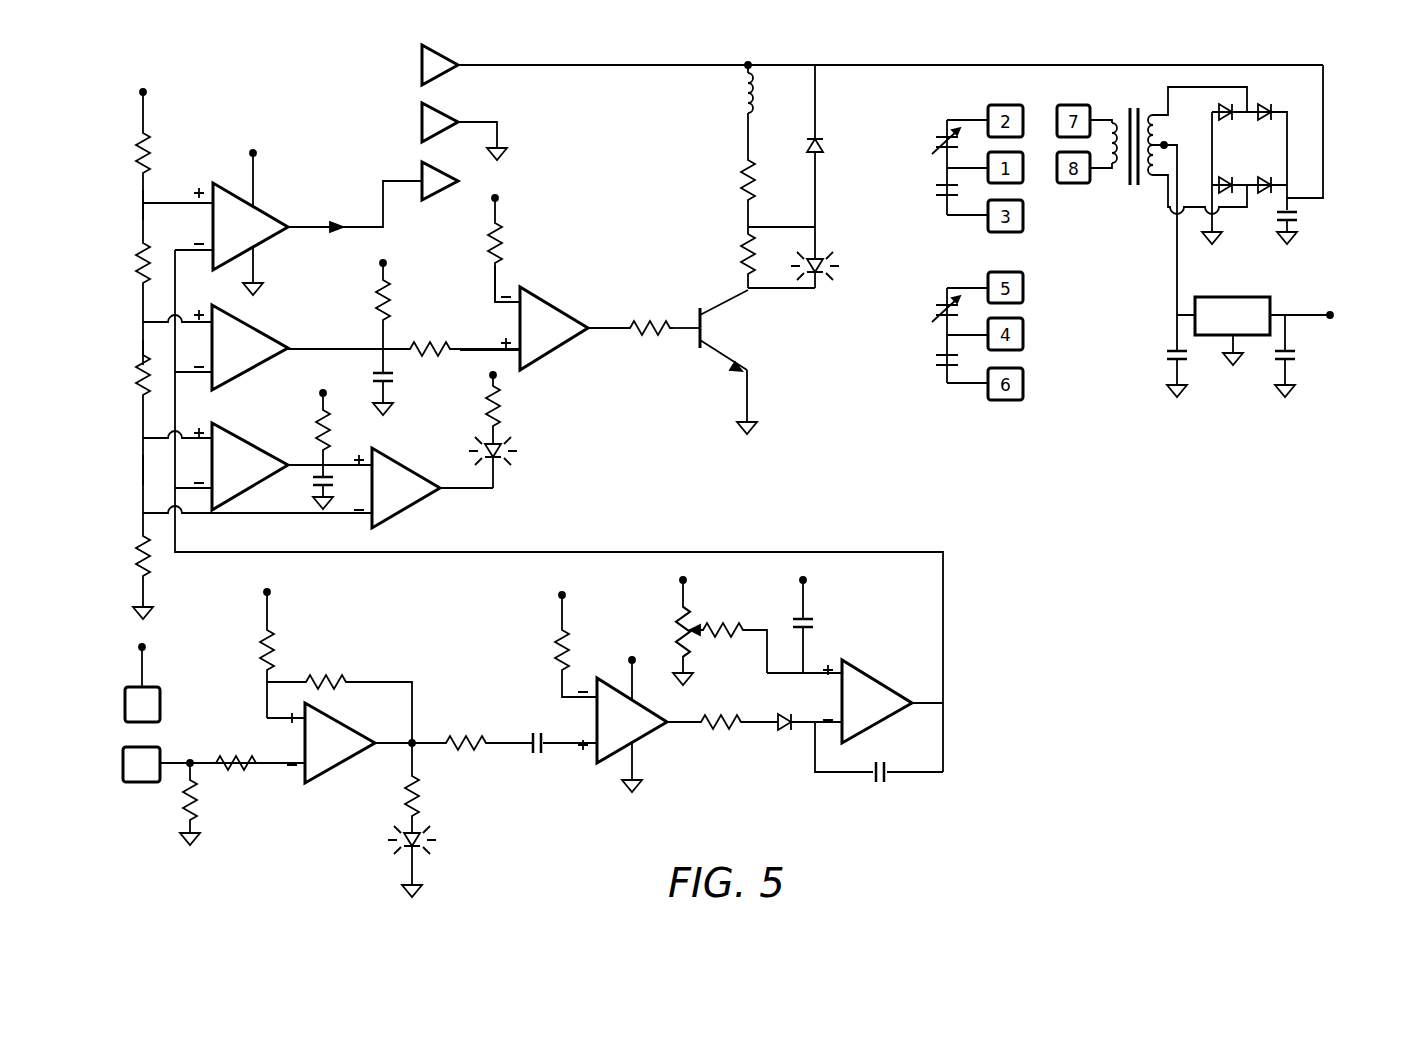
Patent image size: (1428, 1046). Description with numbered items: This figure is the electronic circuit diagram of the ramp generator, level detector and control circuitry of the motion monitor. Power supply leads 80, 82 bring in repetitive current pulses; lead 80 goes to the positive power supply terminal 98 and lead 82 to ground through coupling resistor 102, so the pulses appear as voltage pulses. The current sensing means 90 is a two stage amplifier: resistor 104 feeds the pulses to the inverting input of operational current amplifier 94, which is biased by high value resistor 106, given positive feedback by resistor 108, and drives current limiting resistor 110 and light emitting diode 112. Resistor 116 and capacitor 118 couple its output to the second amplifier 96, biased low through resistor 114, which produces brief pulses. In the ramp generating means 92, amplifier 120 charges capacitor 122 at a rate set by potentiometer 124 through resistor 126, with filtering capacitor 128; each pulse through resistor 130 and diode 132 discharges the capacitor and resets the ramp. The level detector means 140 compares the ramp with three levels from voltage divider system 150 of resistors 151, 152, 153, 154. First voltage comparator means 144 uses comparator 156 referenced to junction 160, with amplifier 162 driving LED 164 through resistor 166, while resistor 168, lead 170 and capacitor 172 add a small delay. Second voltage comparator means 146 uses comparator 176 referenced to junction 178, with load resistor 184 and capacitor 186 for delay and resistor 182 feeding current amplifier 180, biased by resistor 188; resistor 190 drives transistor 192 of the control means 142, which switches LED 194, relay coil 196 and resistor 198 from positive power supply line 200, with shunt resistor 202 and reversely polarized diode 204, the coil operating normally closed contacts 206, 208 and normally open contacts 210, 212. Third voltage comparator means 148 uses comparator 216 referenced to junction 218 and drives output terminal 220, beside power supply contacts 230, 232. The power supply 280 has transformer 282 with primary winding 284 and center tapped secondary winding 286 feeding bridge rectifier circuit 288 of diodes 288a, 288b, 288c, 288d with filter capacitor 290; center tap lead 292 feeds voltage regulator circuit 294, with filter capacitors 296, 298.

The power supply lead 80 is at (141, 666).
The power supply lead 82 is at (138, 785).
The current sensing means 90 is at (294, 803).
The ramp generating means 92 is at (930, 792).
The operational current amplifier 94 is at (325, 786).
The operational current amplifier 96 is at (654, 757).
The positive power supply terminal 98 is at (492, 199).
The coupling resistor 102 is at (197, 790).
The resistor 104 is at (243, 771).
The high value resistor 106 is at (270, 642).
The high value resistor 108 is at (330, 689).
The current limiting resistor 110 is at (410, 781).
The light emitting diode 112 is at (428, 860).
The high value resistor 114 is at (570, 650).
The resistor 116 is at (468, 751).
The capacitor 118 is at (540, 756).
The operational current amplifier 120 is at (900, 726).
The capacitor 122 is at (890, 784).
The adjustable potentiometer 124 is at (694, 666).
The high value resistor 126 is at (702, 637).
The filtering capacitor 128 is at (818, 621).
The resistor 130 is at (706, 731).
The diode 132 is at (780, 731).
The level detector means 140 is at (238, 528).
The control means 142 is at (714, 412).
The first voltage comparator means 144 is at (138, 471).
The second voltage comparator means 146 is at (138, 355).
The third voltage comparator means 148 is at (138, 234).
The voltage divider system 150 is at (118, 126).
The resistor 151 is at (150, 170).
The resistor 152 is at (139, 276).
The resistor 153 is at (139, 386).
The resistor 154 is at (136, 572).
The operational amplifier 156 is at (258, 445).
The junction 160 is at (143, 438).
The operational amplifier 162 is at (424, 508).
The light emitting diode 164 is at (517, 450).
The current limiting resistor 166 is at (505, 394).
The high value resistor 168 is at (326, 410).
The lead 170 is at (318, 440).
The capacitor 172 is at (312, 479).
The operational amplifier 176 is at (233, 320).
The junction 178 is at (143, 322).
The current amplifier 180 is at (547, 300).
The high value resistor 182 is at (408, 349).
The load resistor 184 is at (378, 284).
The capacitor 186 is at (378, 376).
The high value resistor 188 is at (503, 236).
The resistor 190 is at (634, 328).
The transistor 192 is at (708, 316).
The light emitting diode 194 is at (833, 253).
The relay coil 196 is at (745, 106).
The resistor 198 is at (752, 170).
The positive power supply line 200 is at (944, 65).
The resistor 202 is at (754, 276).
The reversely polarized diode 204 is at (826, 149).
The normally closed contacts 206 is at (931, 141).
The normally closed contacts 208 is at (931, 309).
The normally open contacts 210 is at (936, 190).
The normally open contacts 212 is at (936, 360).
The operational amplifier 216 is at (278, 203).
The junction 218 is at (143, 203).
The output terminal 220 is at (428, 173).
The power supply output contact 230 is at (421, 54).
The power supply output contact 232 is at (420, 126).
The power supply 280 is at (1333, 93).
The power transformer 282 is at (1136, 192).
The primary winding 284 is at (1108, 96).
The center tapped secondary winding 286 is at (1202, 140).
The bridge rectifier circuit 288 is at (1250, 94).
The diode 288a is at (1263, 120).
The diode 288b is at (1232, 195).
The diode 288c is at (1266, 178).
The diode 288d is at (1220, 121).
The filter capacitor 290 is at (1300, 220).
The center tap lead 292 is at (1177, 280).
The voltage regulator circuit 294 is at (1207, 340).
The filter capacitor 296 is at (1167, 354).
The filter capacitor 298 is at (1297, 360).